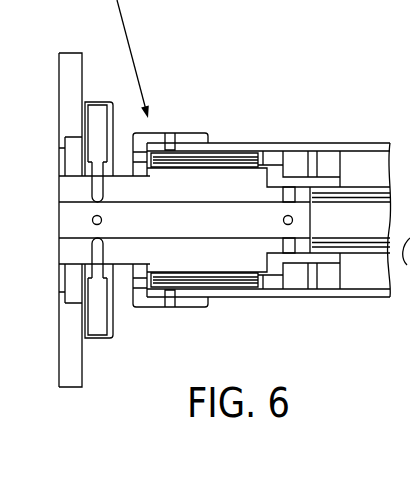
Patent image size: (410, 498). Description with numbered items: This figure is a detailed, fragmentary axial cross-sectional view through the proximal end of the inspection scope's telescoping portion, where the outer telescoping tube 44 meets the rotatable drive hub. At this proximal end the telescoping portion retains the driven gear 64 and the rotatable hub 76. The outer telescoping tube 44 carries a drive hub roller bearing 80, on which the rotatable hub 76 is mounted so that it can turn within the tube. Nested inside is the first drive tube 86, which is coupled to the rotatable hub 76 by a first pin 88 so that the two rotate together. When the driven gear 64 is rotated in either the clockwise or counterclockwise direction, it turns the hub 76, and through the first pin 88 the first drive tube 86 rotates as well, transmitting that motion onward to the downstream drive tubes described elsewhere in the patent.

The driven gear 64 is at (69, 75).
The drive hub roller bearing 80 is at (218, 152).
The outer telescoping tube 44 is at (265, 143).
The rotatable hub 76 is at (242, 187).
The first pin 88 is at (297, 195).
The first drive tube 86 is at (352, 252).